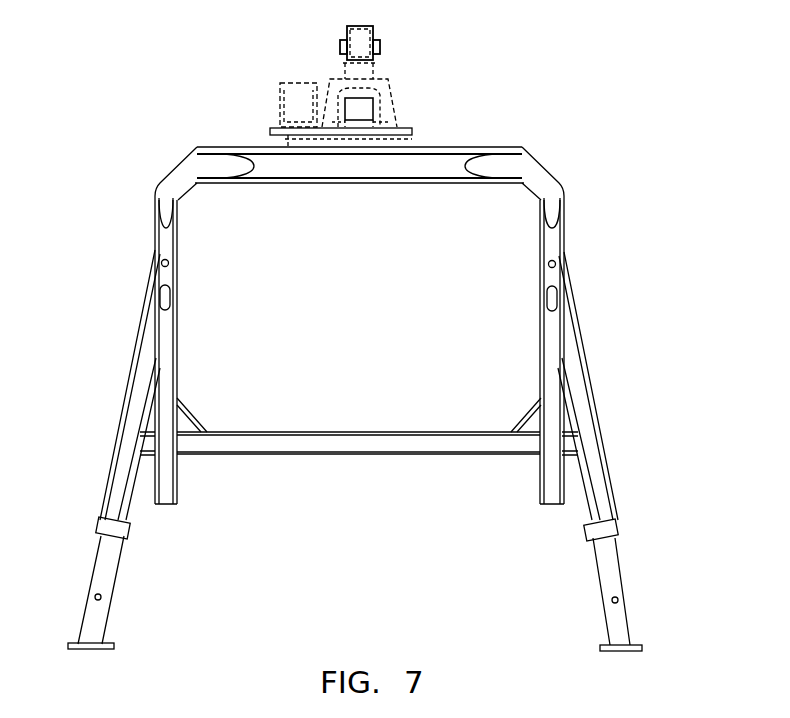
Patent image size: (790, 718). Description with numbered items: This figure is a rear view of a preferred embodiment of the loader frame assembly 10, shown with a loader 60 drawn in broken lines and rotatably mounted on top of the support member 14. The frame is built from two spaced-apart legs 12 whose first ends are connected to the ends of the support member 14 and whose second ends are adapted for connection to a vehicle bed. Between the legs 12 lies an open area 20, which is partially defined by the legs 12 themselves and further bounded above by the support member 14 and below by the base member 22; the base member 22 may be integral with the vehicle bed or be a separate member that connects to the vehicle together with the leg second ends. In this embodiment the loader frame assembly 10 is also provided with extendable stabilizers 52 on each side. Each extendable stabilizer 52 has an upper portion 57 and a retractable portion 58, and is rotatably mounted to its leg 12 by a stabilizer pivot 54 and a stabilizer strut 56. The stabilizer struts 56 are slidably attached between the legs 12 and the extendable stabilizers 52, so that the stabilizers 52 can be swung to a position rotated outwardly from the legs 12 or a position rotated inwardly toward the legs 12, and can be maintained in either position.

The loader frame assembly 10 is at (613, 209).
The legs 12 is at (168, 354).
The support member 14 is at (332, 168).
The open area 20 is at (382, 316).
The base member 22 is at (322, 443).
The extendable stabilizers 52 is at (76, 547).
The stabilizer pivots 54 is at (161, 263).
The stabilizer struts 56 is at (147, 445).
The upper portions 57 is at (135, 403).
The retractable portions 58 is at (93, 617).
The loader 60 is at (430, 104).